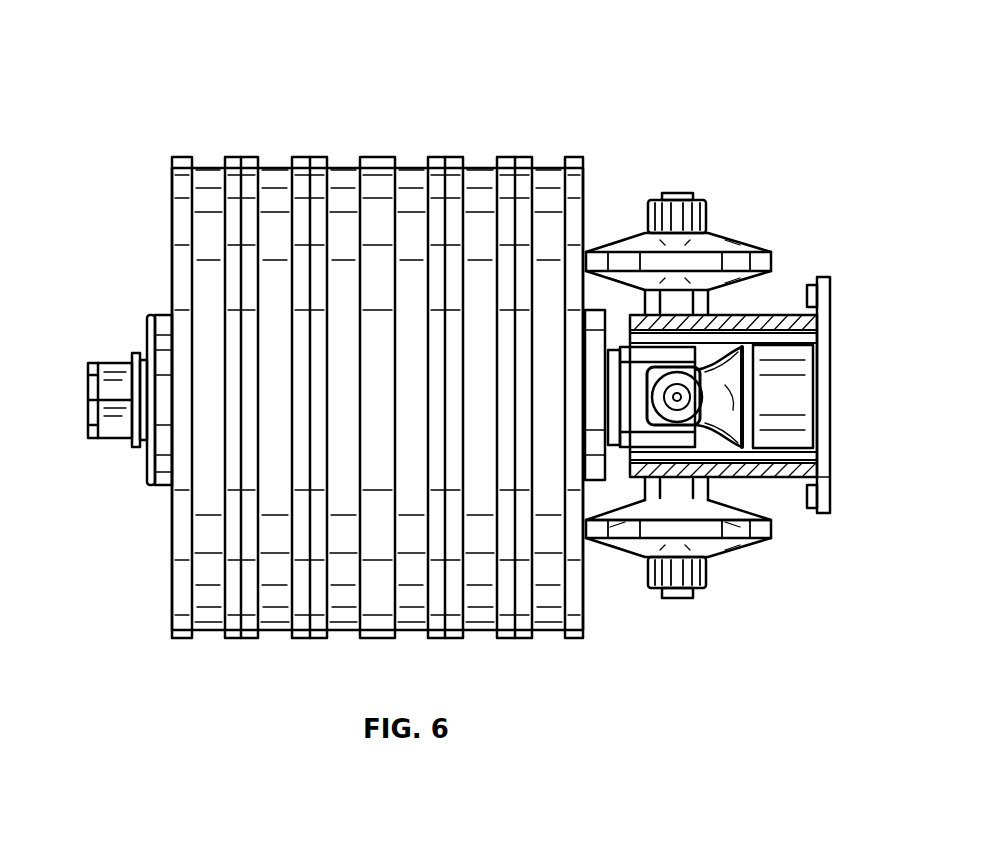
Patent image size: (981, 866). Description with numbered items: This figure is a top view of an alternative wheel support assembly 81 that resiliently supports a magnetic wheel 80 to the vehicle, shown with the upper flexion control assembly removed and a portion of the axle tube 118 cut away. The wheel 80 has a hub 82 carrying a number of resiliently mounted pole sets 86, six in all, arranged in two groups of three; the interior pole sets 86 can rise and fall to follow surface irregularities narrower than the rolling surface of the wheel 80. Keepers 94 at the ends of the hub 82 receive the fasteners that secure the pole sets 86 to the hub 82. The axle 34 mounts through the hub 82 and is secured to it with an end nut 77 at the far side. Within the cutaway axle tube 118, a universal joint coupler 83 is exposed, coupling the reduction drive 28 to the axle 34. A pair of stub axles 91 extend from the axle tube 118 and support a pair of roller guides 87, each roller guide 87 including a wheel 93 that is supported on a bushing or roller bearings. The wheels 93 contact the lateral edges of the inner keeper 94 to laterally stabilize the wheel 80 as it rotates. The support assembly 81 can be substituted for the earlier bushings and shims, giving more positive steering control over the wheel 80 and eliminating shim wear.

The magnetic wheel 80 is at (172, 205).
The pole set 86 is at (548, 167).
The keeper 94 is at (580, 198).
The hub 82 is at (160, 475).
The end nut 77 is at (118, 432).
The axle tube 118 is at (776, 314).
The universal joint coupler 83 is at (725, 388).
The axle 34 is at (783, 384).
The reduction drive 28 is at (832, 320).
The wheel support assembly 81 is at (770, 480).
The roller guide 87 is at (732, 262).
The wheel 93 is at (765, 252).
The stub axle 91 is at (672, 193).